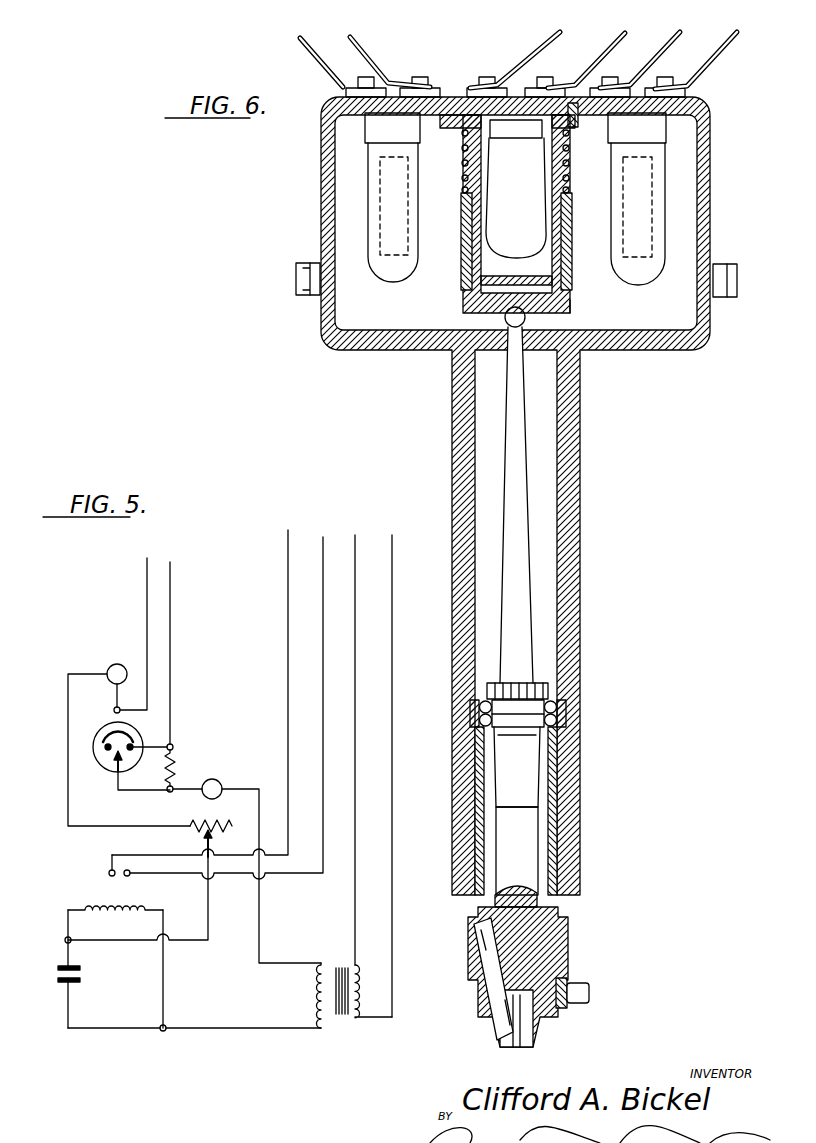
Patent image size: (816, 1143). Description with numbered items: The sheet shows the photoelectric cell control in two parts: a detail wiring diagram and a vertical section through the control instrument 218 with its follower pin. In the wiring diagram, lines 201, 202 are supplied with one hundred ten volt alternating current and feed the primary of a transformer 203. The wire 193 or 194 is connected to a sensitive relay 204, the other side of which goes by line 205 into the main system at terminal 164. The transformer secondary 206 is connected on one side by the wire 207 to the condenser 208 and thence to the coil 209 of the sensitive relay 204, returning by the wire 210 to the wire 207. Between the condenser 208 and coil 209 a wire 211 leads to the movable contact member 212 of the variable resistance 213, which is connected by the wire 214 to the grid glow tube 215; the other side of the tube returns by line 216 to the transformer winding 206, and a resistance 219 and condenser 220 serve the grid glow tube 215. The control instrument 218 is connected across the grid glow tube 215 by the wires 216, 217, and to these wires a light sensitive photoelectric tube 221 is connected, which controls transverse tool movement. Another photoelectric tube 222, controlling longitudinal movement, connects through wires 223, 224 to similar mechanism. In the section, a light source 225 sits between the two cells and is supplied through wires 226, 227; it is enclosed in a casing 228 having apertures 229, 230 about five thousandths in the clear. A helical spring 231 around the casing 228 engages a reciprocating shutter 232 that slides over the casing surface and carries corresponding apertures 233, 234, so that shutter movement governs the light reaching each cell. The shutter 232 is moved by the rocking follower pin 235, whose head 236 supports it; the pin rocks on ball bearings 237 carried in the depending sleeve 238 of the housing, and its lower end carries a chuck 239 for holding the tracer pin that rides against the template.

In FIG. 5, the terminal 164 is at (323, 552).
In FIG. 5, the wire 193 is at (218, 682).
In FIG. 5, the wire 194 is at (288, 548).
In FIG. 5, the line 201 is at (392, 546).
In FIG. 5, the line 202 is at (355, 540).
In FIG. 5, the transformer 203 is at (362, 1002).
In FIG. 5, the sensitive relay 204 is at (108, 873).
In FIG. 5, the line 205 is at (303, 875).
In FIG. 5, the transformer secondary 206 is at (318, 990).
In FIG. 5, the wire 207 is at (255, 1030).
In FIG. 5, the condenser 208 is at (66, 986).
In FIG. 5, the coil 209 is at (100, 906).
In FIG. 5, the wire 210 is at (163, 1034).
In FIG. 5, the wire 211 is at (107, 942).
In FIG. 5, the movable contact member 212 is at (204, 847).
In FIG. 5, the variable resistance 213 is at (196, 826).
In FIG. 5, the wire 214 is at (68, 690).
In FIG. 5, the grid glow tube 215 is at (93, 752).
In FIG. 6, the line 216 is at (300, 43).
In FIG. 5, the line 216 is at (147, 578).
In FIG. 6, the wire 217 is at (358, 40).
In FIG. 5, the wire 217 is at (170, 578).
In FIG. 6, the control instrument 218 is at (322, 210).
In FIG. 5, the resistance 219 is at (176, 771).
In FIG. 5, the condenser 220 is at (173, 745).
In FIG. 6, the photoelectric tube 221 is at (368, 245).
In FIG. 6, the photoelectric tube 222 is at (665, 216).
In FIG. 6, the wire 223 is at (680, 37).
In FIG. 6, the wire 224 is at (732, 37).
In FIG. 6, the light source 225 is at (518, 228).
In FIG. 6, the wire 226 is at (562, 34).
In FIG. 6, the wire 227 is at (623, 37).
In FIG. 6, the casing 228 is at (485, 282).
In FIG. 6, the aperture 229 is at (569, 179).
In FIG. 6, the aperture 230 is at (463, 163).
In FIG. 6, the helical spring 231 is at (569, 161).
In FIG. 6, the reciprocating shutter 232 is at (572, 307).
In FIG. 6, the aperture 233 is at (569, 214).
In FIG. 6, the aperture 234 is at (464, 226).
In FIG. 6, the rocking follower pin 235 is at (506, 418).
In FIG. 6, the head 236 is at (512, 328).
In FIG. 6, the ball bearings 237 is at (568, 715).
In FIG. 6, the depending sleeve 238 is at (582, 522).
In FIG. 6, the chuck 239 is at (525, 1040).